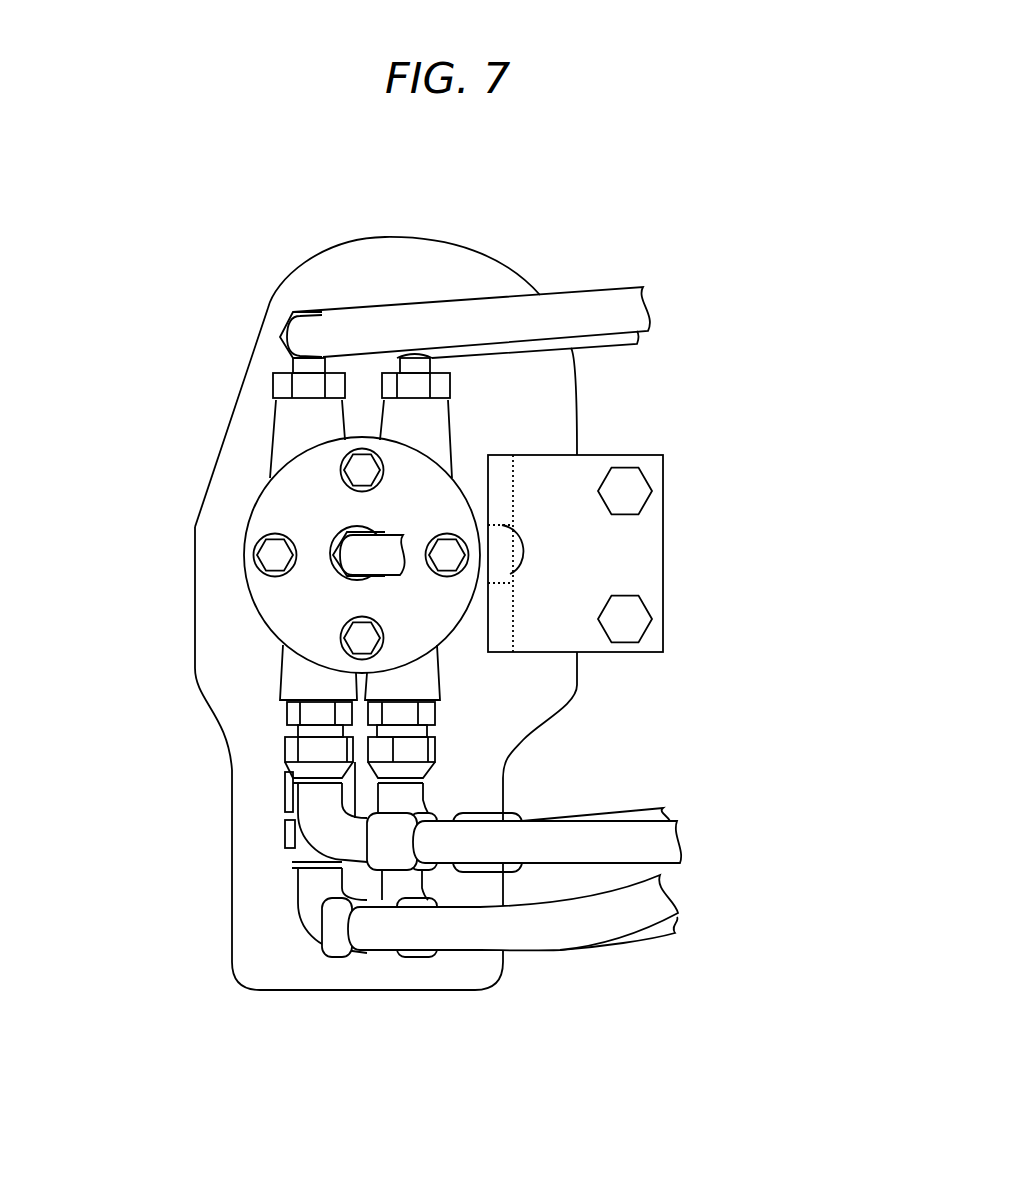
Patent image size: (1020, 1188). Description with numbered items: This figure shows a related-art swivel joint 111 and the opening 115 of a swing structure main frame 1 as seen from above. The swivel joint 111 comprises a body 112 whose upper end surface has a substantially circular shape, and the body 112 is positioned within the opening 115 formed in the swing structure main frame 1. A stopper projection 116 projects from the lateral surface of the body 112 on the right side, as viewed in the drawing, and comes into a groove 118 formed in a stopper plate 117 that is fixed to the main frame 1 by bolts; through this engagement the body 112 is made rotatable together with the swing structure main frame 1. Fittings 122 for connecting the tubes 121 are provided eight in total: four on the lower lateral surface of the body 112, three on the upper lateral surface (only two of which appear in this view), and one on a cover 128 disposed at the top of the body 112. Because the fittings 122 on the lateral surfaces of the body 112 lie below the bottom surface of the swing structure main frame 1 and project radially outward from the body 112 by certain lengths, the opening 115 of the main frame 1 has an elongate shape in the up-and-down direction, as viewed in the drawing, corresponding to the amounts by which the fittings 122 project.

The swing structure main frame 1 is at (57, 705).
The swivel joint 111 is at (253, 682).
The body 112 is at (258, 487).
The opening 115 is at (243, 405).
The stopper projection 116 is at (523, 553).
The stopper plate 117 is at (652, 552).
The groove 118 is at (503, 576).
The tubes 121 is at (620, 300).
The fittings 122 is at (268, 383).
The cover 128 is at (333, 566).